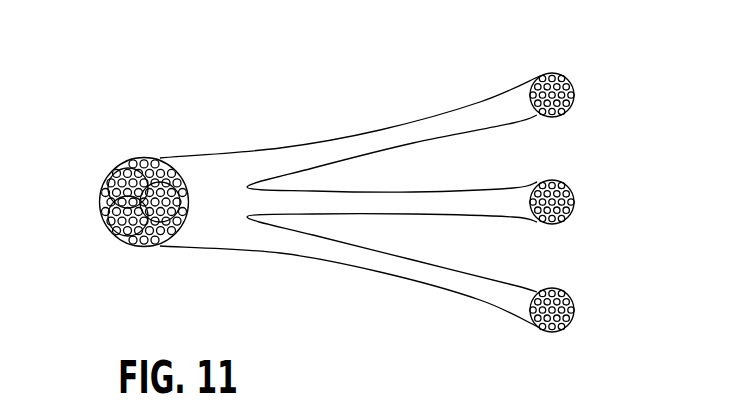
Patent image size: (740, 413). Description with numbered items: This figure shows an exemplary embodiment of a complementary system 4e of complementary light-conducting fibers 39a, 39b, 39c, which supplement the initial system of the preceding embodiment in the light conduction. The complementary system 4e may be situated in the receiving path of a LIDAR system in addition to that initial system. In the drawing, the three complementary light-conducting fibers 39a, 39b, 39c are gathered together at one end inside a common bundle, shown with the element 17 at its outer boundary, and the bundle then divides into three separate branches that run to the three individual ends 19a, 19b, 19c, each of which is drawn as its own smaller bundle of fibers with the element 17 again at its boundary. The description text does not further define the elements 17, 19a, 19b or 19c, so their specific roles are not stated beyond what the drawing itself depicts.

The complementary system 4e is at (154, 143).
The sheath 17 is at (116, 157).
The complementary light-conducting fiber 39a is at (106, 187).
The complementary light-conducting fiber 39b is at (105, 218).
The complementary light-conducting fiber 39c is at (122, 247).
The first branch line 19a is at (572, 78).
The second branch line 19b is at (572, 186).
The third branch line 19c is at (570, 293).